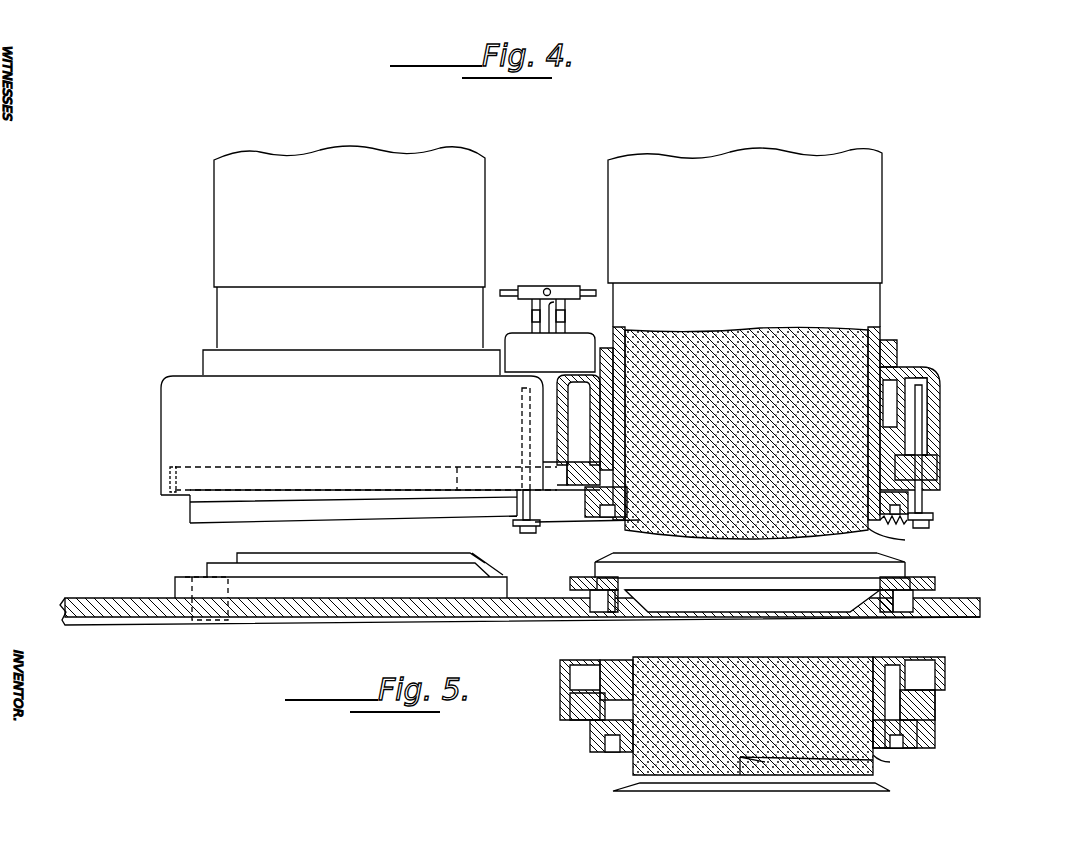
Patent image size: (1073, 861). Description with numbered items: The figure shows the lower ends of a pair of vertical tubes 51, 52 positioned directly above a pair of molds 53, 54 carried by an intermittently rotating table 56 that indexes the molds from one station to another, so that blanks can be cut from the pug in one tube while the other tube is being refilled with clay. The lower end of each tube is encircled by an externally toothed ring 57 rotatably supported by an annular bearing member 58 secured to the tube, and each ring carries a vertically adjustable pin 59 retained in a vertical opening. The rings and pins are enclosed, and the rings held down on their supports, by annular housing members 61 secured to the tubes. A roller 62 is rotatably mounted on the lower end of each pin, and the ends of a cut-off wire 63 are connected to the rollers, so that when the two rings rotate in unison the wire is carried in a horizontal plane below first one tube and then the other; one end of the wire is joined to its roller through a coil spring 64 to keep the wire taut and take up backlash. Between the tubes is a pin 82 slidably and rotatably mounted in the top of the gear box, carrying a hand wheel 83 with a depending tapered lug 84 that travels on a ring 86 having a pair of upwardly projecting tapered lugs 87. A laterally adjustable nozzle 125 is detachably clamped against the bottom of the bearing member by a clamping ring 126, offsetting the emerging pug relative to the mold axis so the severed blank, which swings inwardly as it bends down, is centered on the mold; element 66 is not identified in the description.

In FIG. 4, the vertical tube 51 is at (875, 196).
In FIG. 4, the vertical tube 52 is at (228, 206).
In FIG. 4, the mold 53 is at (752, 582).
In FIG. 5, the mold 53 is at (640, 783).
In FIG. 4, the mold 54 is at (237, 557).
In FIG. 4, the intermittently rotating table 56 is at (98, 600).
In FIG. 4, the externally toothed ring 57 is at (176, 467).
In FIG. 5, the externally toothed ring 57 is at (588, 693).
In FIG. 5, the annular bearing member 58 is at (935, 715).
In FIG. 5, the vertically adjustable pin 59 is at (753, 716).
In FIG. 5, the annular housing member 61 is at (945, 665).
In FIG. 5, the roller 62 is at (661, 736).
In FIG. 4, the cut-off wire 63 is at (587, 522).
In FIG. 5, the cut-off wire 63 is at (762, 760).
In FIG. 4, the coil spring 64 is at (895, 524).
In FIG. 4, the plate 66 is at (500, 352).
In FIG. 4, the pin 82 is at (548, 330).
In FIG. 4, the hand wheel 83 is at (533, 286).
In FIG. 4, the depending tapered lug 84 is at (532, 312).
In FIG. 4, the ring 86 is at (563, 325).
In FIG. 4, the upwardly projecting tapered lug 87 is at (565, 314).
In FIG. 4, the nozzle 125 is at (880, 532).
In FIG. 5, the nozzle 125 is at (880, 752).
In FIG. 5, the clamping ring 126 is at (917, 737).